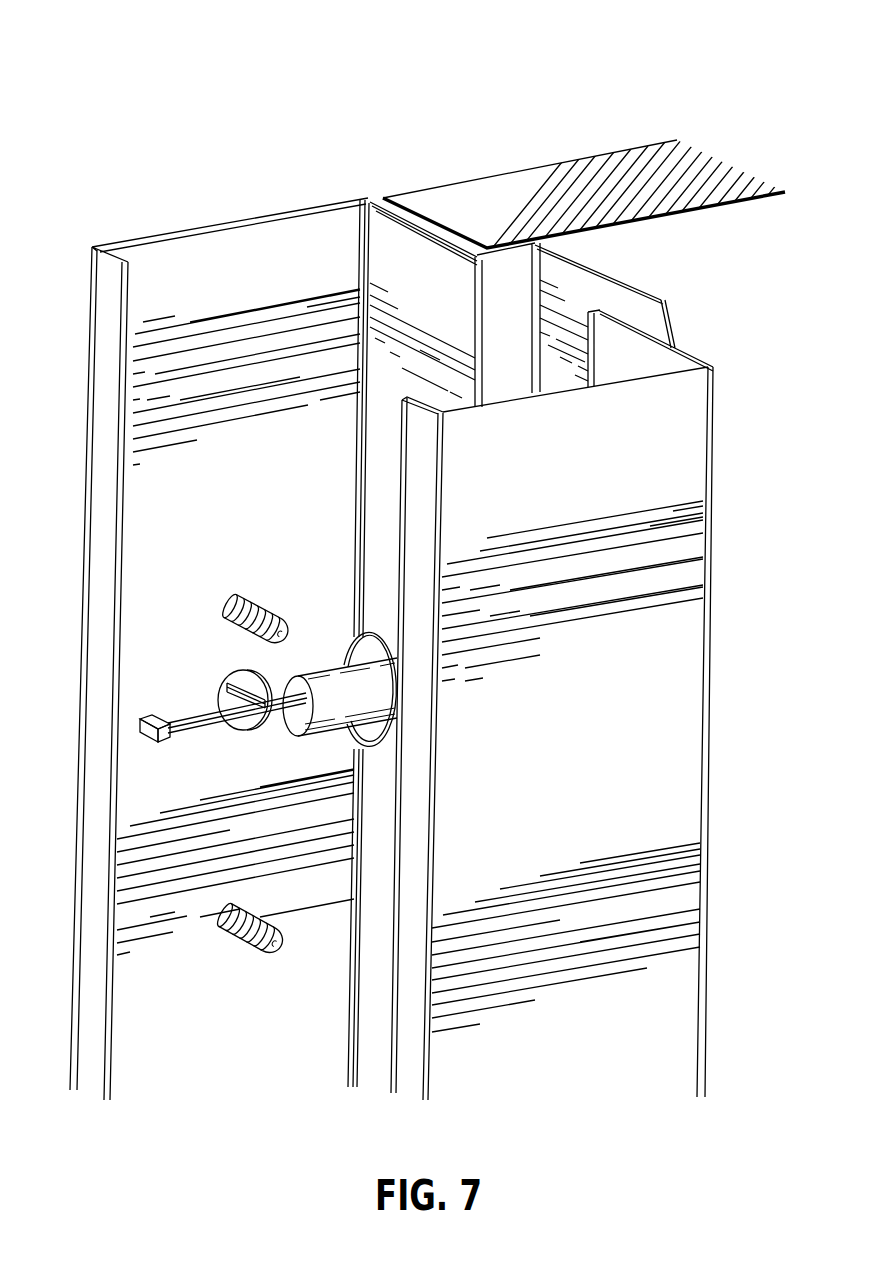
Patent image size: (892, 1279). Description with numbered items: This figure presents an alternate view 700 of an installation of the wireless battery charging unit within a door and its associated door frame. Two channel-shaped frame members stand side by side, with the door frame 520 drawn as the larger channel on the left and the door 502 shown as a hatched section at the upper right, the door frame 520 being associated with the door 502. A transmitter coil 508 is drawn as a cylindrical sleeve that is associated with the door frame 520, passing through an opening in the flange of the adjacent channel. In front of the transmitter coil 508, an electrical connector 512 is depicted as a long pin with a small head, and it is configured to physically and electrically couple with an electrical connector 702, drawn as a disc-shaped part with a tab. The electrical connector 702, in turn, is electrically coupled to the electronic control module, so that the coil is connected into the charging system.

The alternate view 700 is at (652, 80).
The door 502 is at (470, 193).
The door frame 520 is at (245, 218).
The transmitter coil 508 is at (337, 688).
The electrical connector 702 is at (265, 668).
The electrical connector 512 is at (145, 718).